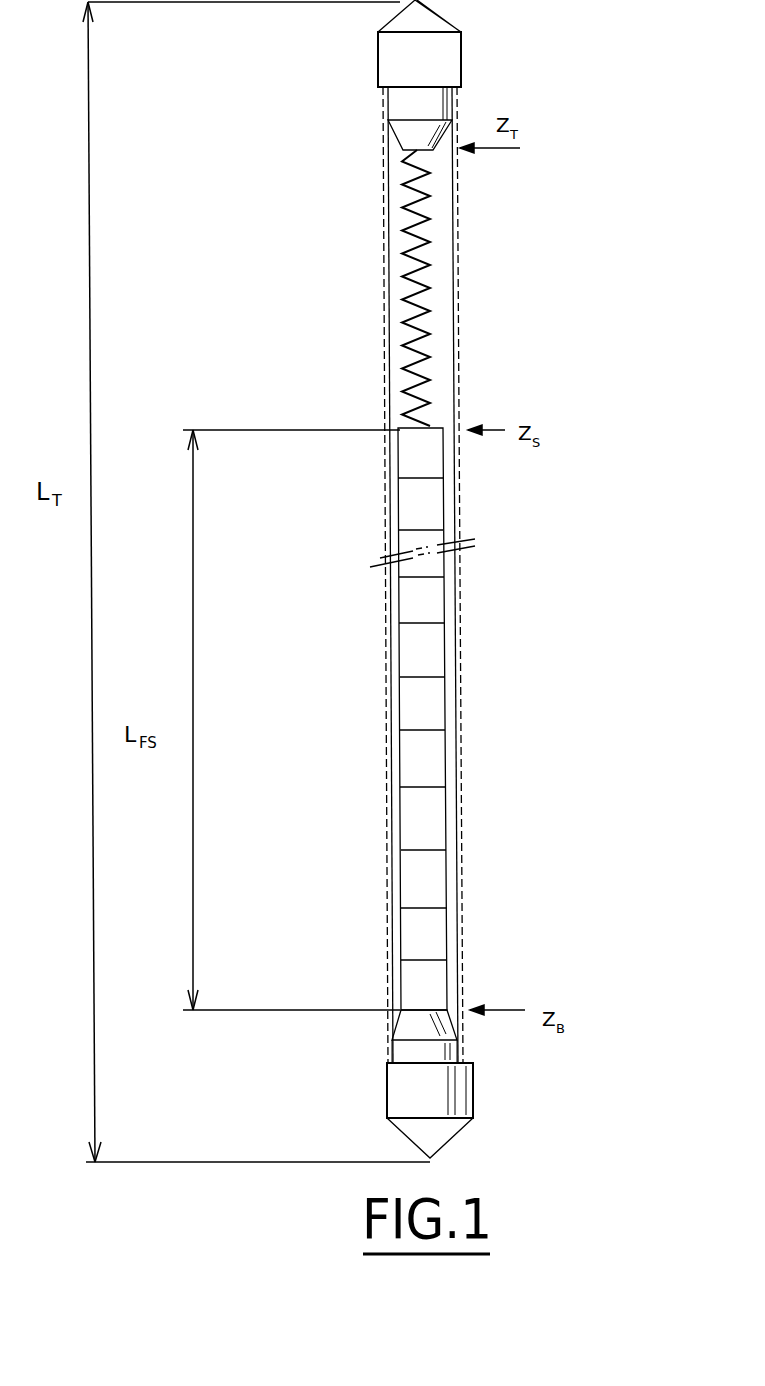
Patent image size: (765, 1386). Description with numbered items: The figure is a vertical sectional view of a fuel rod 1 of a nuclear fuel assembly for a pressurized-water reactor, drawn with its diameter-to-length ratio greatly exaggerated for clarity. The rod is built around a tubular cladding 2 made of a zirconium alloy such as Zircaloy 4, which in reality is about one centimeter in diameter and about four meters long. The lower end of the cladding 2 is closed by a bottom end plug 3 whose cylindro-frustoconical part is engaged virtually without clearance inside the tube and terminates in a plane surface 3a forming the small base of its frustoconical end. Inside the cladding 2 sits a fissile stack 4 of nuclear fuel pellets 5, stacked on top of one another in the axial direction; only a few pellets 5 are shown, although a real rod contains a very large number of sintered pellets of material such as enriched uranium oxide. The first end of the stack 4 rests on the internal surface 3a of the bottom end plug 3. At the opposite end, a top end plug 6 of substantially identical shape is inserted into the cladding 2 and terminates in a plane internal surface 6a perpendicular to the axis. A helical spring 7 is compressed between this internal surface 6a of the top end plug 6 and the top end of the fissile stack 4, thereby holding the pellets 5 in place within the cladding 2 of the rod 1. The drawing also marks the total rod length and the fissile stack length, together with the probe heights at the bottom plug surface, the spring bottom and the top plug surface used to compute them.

The fuel rod 1 is at (500, 658).
The tubular cladding 2 is at (465, 930).
The bottom end plug 3 is at (457, 1093).
The plane surface 3a is at (427, 1007).
The stack of nuclear fuel pellets 4 is at (416, 649).
The nuclear fuel pellets 5 is at (410, 598).
The top end plug 6 is at (455, 60).
The plane internal surface 6a is at (428, 150).
The helical spring 7 is at (420, 282).